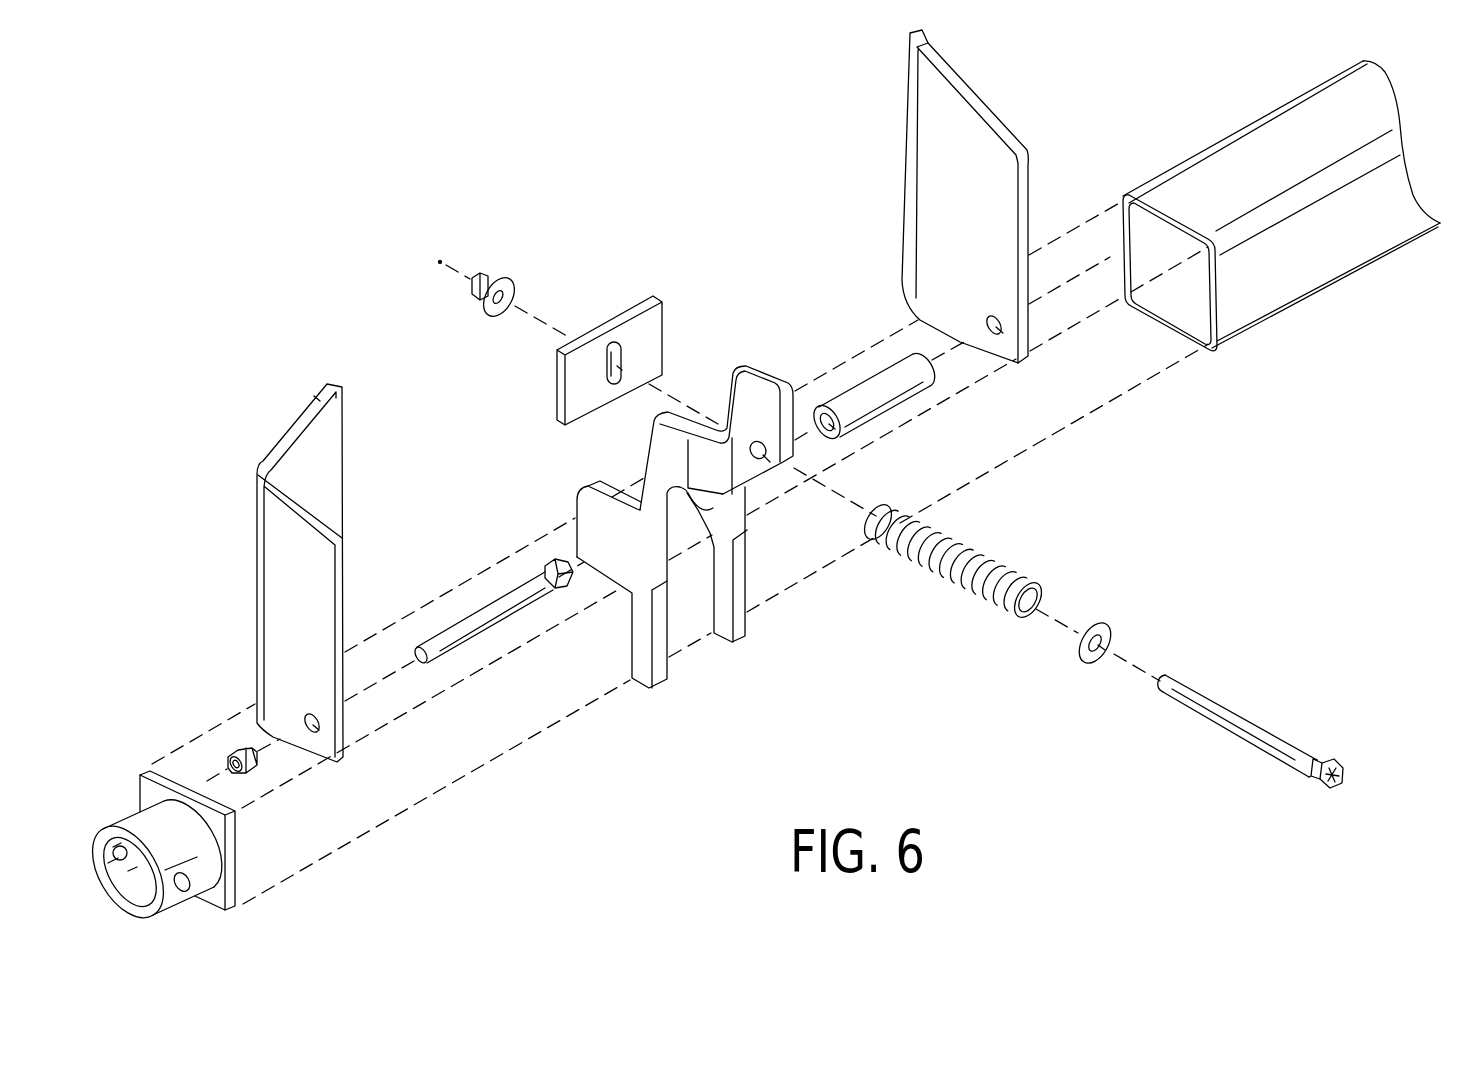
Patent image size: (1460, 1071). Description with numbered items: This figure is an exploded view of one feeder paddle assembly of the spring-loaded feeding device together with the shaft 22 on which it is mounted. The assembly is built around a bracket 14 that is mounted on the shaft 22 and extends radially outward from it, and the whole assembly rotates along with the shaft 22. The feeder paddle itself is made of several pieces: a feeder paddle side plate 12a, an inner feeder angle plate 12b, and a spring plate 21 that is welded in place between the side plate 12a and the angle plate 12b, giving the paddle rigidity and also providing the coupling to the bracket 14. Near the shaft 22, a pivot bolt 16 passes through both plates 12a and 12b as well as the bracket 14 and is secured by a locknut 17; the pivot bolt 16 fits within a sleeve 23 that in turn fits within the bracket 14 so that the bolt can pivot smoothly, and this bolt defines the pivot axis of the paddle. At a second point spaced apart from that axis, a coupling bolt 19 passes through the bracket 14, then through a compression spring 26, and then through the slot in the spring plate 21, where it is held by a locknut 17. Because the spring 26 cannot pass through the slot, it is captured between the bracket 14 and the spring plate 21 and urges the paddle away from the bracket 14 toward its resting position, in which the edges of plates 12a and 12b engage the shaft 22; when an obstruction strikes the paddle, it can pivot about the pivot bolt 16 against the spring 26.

The feeder paddle side plate 12a is at (982, 97).
The inner feeder angle plate 12b is at (280, 431).
The bracket 14 is at (748, 632).
The pivot bolt 16 is at (435, 648).
The locknut 17 is at (485, 272).
The coupling bolt 19 is at (1345, 763).
The spring plate 21 is at (650, 316).
The shaft 22 is at (1330, 257).
The sleeve 23 is at (868, 382).
The spring 26 is at (1020, 578).